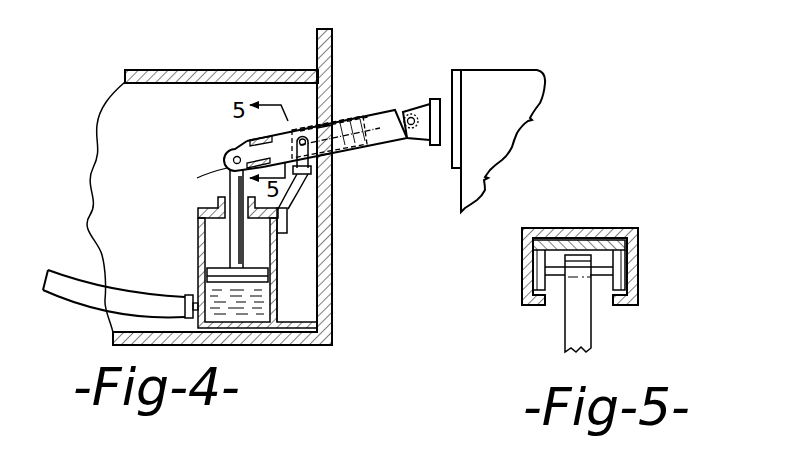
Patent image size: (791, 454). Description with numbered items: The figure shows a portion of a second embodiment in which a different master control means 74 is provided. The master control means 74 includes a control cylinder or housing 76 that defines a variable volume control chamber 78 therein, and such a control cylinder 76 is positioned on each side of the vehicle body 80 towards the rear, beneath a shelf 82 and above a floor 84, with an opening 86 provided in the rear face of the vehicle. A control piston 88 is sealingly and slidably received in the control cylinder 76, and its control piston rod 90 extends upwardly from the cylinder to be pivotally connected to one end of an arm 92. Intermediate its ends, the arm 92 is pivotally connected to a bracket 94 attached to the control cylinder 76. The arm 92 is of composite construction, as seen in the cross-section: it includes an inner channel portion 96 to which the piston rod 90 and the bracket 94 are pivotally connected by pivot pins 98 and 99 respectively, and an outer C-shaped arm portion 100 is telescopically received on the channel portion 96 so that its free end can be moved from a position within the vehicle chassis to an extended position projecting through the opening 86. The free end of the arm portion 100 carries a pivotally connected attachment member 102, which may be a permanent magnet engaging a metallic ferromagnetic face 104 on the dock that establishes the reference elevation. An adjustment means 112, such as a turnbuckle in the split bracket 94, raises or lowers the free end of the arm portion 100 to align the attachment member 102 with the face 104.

In FIG. 4, the master control means 74 is at (290, 250).
In FIG. 4, the control cylinder 76 is at (282, 308).
In FIG. 4, the variable volume control chamber 78 is at (263, 318).
In FIG. 4, the vehicle body 80 is at (340, 77).
In FIG. 4, the shelf 82 is at (230, 42).
In FIG. 4, the hose 84 is at (110, 335).
In FIG. 4, the opening 86 is at (330, 190).
In FIG. 4, the control piston 88 is at (210, 268).
In FIG. 4, the control piston rod 90 is at (230, 242).
In FIG. 5, the control piston rod 90 is at (583, 335).
In FIG. 4, the arm 92 is at (303, 124).
In FIG. 4, the bracket 94 is at (310, 188).
In FIG. 4, the inner channel portion 96 is at (233, 167).
In FIG. 5, the inner channel portion 96 is at (605, 284).
In FIG. 4, the pivot pin 98 is at (240, 150).
In FIG. 5, the pivot pin 98 is at (560, 268).
In FIG. 4, the pivot pin 99 is at (363, 143).
In FIG. 4, the outer C-shaped arm portion 100 is at (366, 112).
In FIG. 5, the outer C-shaped arm portion 100 is at (638, 247).
In FIG. 4, the attachment member 102 is at (435, 99).
In FIG. 4, the metallic ferromagnetic face 104 is at (462, 70).
In FIG. 4, the adjustment means 112 is at (330, 161).